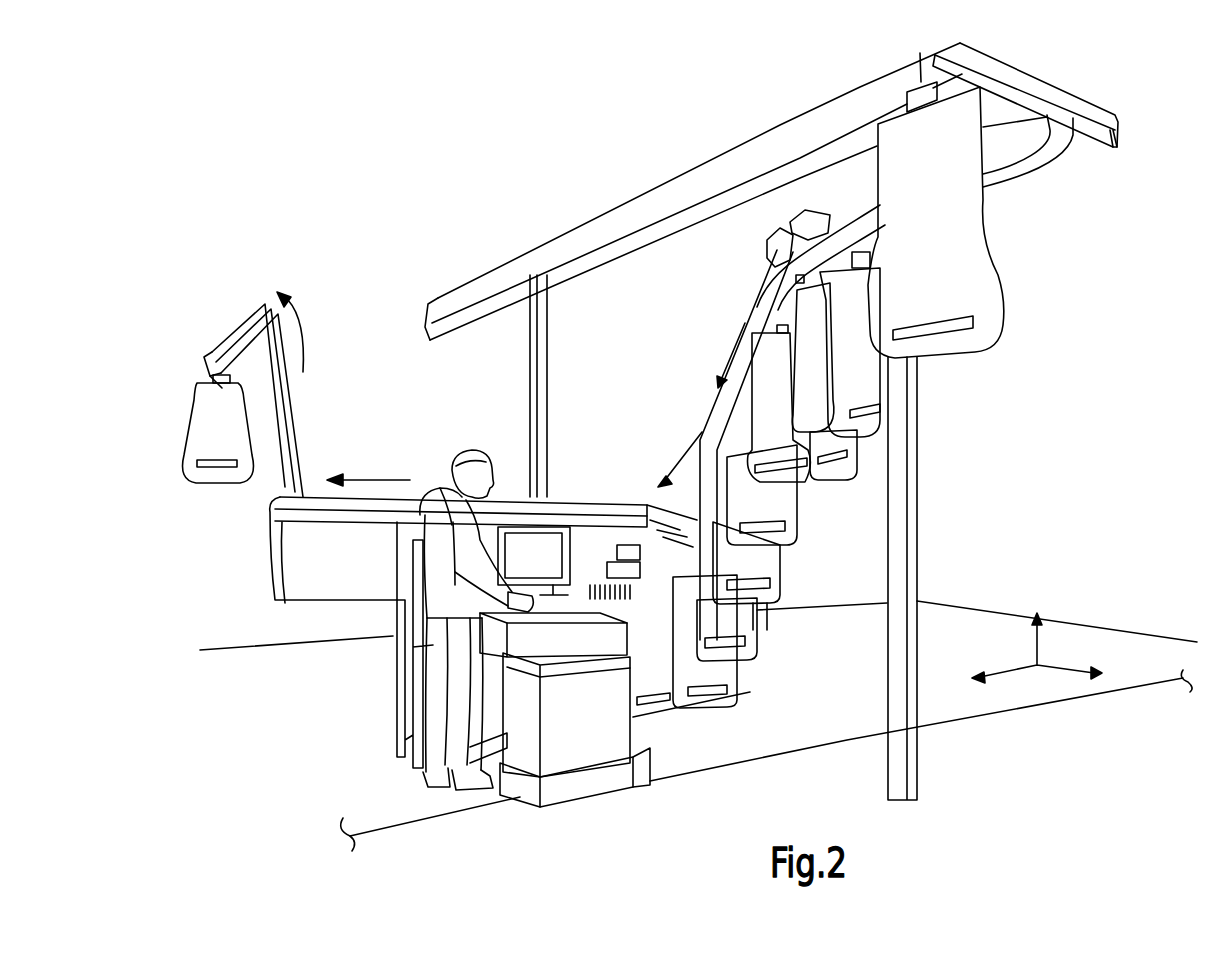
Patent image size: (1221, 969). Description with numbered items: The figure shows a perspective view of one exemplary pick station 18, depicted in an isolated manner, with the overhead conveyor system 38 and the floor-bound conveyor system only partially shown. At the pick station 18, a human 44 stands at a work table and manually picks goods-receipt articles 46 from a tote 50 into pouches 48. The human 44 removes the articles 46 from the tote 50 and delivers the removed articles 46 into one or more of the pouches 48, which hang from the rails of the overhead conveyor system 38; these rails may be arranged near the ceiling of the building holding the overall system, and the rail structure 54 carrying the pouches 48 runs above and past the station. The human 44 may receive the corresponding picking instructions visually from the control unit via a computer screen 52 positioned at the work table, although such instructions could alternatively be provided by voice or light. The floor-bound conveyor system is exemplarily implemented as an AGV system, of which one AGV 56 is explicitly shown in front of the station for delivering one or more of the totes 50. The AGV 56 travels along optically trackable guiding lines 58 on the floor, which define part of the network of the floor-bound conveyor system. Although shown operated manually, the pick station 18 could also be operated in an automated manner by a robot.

The pick station 18 is at (403, 446).
The overhead conveyor system 38 is at (1024, 183).
The human 44 is at (427, 777).
The articles 46 is at (510, 597).
The pouches 48 is at (940, 362).
The tote 50 is at (632, 637).
The computer screen 52 is at (555, 523).
The conveyor rail 54 is at (607, 209).
The AGV 56 is at (613, 793).
The guiding lines 58 is at (980, 717).